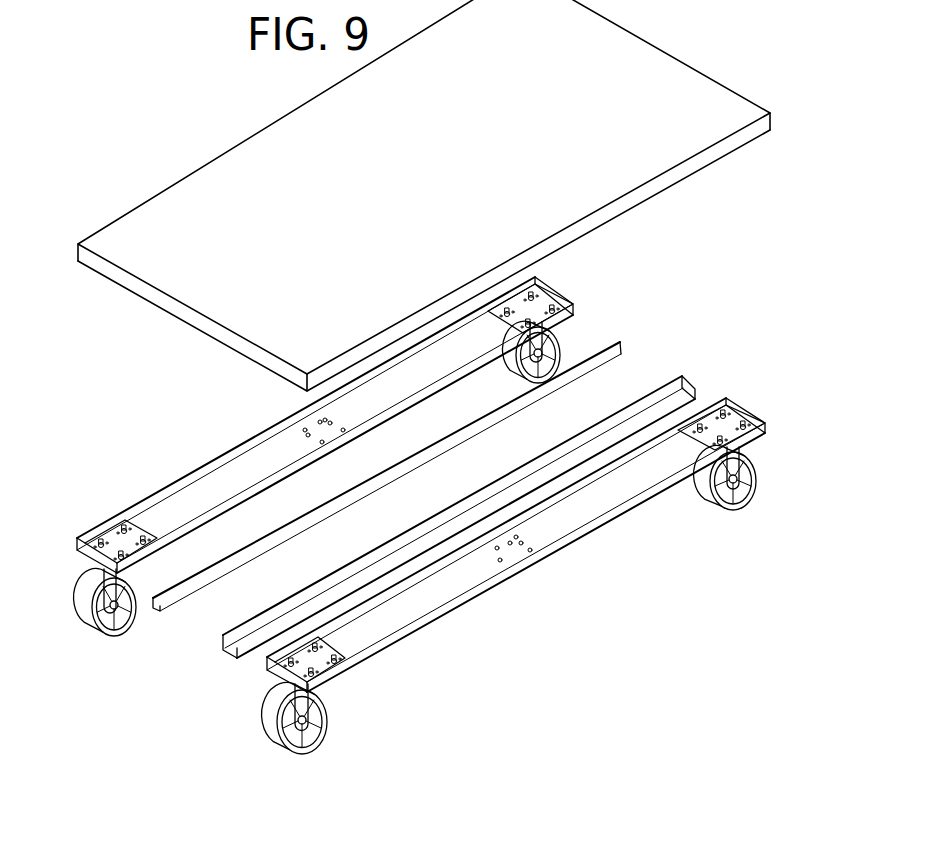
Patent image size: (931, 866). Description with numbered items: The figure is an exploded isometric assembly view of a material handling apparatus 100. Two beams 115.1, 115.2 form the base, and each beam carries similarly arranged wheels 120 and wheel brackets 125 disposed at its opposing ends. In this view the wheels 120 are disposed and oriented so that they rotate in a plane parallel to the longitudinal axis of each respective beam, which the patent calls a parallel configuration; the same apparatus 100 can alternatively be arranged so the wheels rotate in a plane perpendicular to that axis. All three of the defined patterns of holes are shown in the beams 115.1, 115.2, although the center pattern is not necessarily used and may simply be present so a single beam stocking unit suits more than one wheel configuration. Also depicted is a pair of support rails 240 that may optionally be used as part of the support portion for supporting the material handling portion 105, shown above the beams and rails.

The material handling apparatus 100 is at (162, 138).
The material handling portion 105 is at (687, 63).
The beam 115.1 is at (553, 298).
The beam 115.2 is at (738, 408).
The wheel 120 is at (748, 497).
The wheel bracket 125 is at (148, 532).
The support rail 240 is at (652, 386).